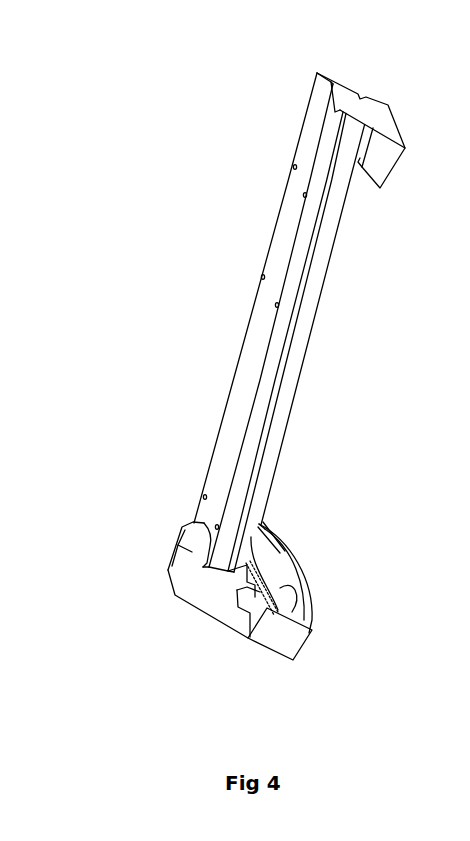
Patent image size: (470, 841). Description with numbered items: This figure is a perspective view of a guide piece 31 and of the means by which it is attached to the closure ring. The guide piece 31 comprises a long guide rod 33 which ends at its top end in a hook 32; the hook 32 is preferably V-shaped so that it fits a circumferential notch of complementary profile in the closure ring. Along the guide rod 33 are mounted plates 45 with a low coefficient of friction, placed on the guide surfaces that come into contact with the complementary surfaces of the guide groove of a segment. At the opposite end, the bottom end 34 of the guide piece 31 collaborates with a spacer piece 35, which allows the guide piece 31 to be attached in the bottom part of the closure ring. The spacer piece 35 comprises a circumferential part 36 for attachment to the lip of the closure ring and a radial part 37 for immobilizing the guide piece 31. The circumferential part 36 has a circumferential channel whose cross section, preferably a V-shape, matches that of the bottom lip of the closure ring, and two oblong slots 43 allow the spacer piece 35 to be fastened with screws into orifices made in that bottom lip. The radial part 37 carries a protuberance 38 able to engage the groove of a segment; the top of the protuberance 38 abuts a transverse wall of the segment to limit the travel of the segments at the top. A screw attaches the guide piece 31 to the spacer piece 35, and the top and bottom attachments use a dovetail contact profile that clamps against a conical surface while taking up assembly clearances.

The guide piece 31 is at (244, 120).
The hook 32 is at (383, 165).
The guide rod 33 is at (280, 263).
The bottom end 34 is at (218, 562).
The spacer piece 35 is at (308, 642).
The circumferential part 36 is at (297, 570).
The radial part 37 is at (197, 585).
The protuberance 38 is at (193, 522).
The oblong slots 43 is at (275, 532).
The plates 45 is at (335, 82).